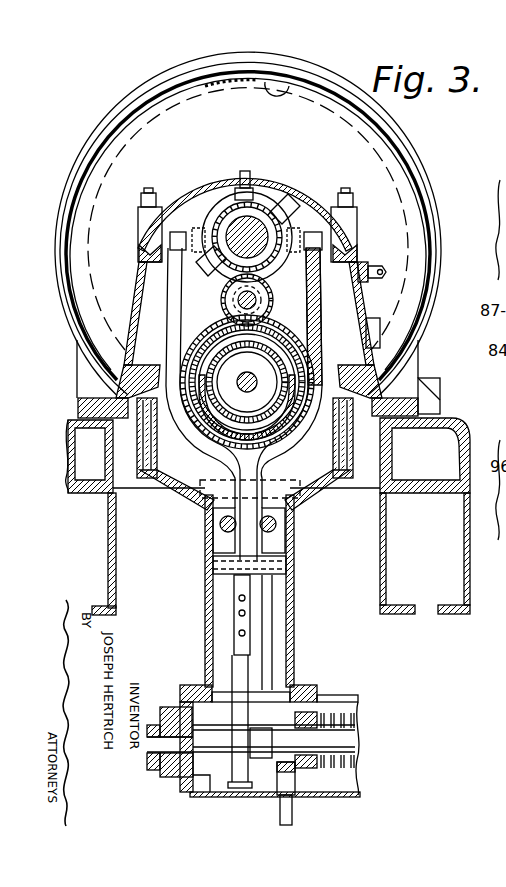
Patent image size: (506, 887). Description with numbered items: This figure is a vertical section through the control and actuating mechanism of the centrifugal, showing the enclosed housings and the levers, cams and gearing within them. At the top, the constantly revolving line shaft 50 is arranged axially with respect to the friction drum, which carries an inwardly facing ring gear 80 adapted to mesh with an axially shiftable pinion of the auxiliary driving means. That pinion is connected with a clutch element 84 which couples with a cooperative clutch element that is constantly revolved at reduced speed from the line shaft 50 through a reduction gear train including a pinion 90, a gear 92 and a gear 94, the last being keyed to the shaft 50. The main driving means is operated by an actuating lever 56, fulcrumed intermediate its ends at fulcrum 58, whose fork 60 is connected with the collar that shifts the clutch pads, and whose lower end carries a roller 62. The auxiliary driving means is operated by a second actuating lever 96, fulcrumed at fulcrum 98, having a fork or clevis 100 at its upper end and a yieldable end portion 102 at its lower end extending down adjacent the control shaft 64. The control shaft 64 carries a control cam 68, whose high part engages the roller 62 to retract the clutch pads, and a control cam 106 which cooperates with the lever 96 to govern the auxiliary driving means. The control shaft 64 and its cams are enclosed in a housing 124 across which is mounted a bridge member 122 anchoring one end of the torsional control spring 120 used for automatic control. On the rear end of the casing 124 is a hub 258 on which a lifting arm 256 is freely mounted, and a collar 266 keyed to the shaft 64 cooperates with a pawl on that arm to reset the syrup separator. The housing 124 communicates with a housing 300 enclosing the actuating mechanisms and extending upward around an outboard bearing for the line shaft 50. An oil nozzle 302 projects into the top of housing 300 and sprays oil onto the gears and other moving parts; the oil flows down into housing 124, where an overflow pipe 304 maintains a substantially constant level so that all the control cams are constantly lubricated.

The line shaft 50 is at (266, 203).
The actuating lever 56 is at (300, 462).
The fulcrum 58 is at (282, 478).
The fork 60 is at (182, 296).
The roller 62 is at (283, 700).
The control shaft 64 is at (342, 742).
The control cam 68 is at (268, 786).
The ring gear 80 is at (272, 84).
The clutch element 84 is at (290, 358).
The pinion 90 is at (262, 305).
The gear 92 is at (268, 290).
The gear 94 is at (218, 230).
The actuating lever 96 is at (246, 505).
The fulcrum 98 is at (210, 565).
The fork or clevis 100 is at (222, 423).
The yieldable end portion 102 is at (237, 690).
The control cam 106 is at (240, 795).
The torsional control spring 120 is at (352, 720).
The bridge member 122 is at (308, 700).
The housing 124 is at (358, 796).
The lifting arm 256 is at (166, 720).
The hub 258 is at (170, 778).
The collar 266 is at (155, 770).
The housing 300 is at (303, 498).
The oil nozzle 302 is at (363, 265).
The overflow pipe 304 is at (297, 780).